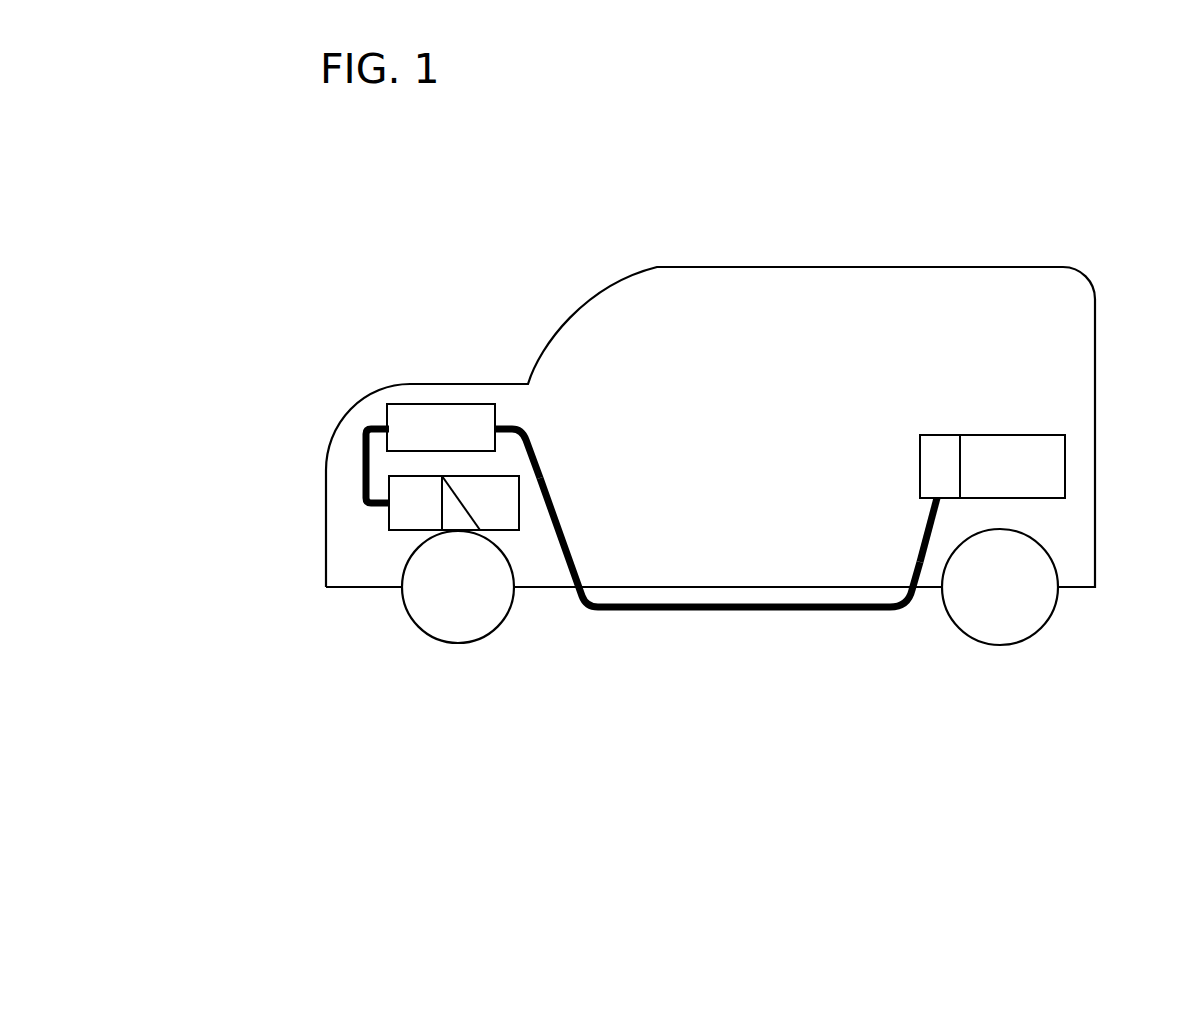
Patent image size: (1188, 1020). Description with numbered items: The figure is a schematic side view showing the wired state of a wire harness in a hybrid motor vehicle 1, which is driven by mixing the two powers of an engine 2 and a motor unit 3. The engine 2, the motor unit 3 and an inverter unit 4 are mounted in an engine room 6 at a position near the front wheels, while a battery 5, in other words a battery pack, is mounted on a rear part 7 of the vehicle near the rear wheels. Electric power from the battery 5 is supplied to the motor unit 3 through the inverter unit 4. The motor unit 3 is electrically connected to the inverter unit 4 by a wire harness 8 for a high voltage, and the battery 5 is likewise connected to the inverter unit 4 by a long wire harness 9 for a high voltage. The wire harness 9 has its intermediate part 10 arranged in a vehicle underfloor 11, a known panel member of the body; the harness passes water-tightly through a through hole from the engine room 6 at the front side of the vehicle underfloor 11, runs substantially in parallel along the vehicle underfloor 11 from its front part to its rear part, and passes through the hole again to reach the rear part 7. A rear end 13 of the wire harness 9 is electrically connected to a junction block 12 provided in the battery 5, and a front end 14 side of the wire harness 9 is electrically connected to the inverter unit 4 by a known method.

The hybrid motor vehicle 1 is at (452, 294).
The engine 2 is at (502, 510).
The motor unit 3 is at (403, 517).
The inverter unit 4 is at (415, 417).
The battery 5 is at (1017, 448).
The engine room 6 is at (345, 558).
The rear part 7 is at (1070, 523).
The wire harness 8 is at (362, 455).
The wire harness 9 is at (653, 612).
The intermediate part 10 is at (762, 612).
The vehicle underfloor 11 is at (850, 588).
The junction block 12 is at (930, 447).
The rear end 13 is at (917, 520).
The front end 14 is at (521, 427).